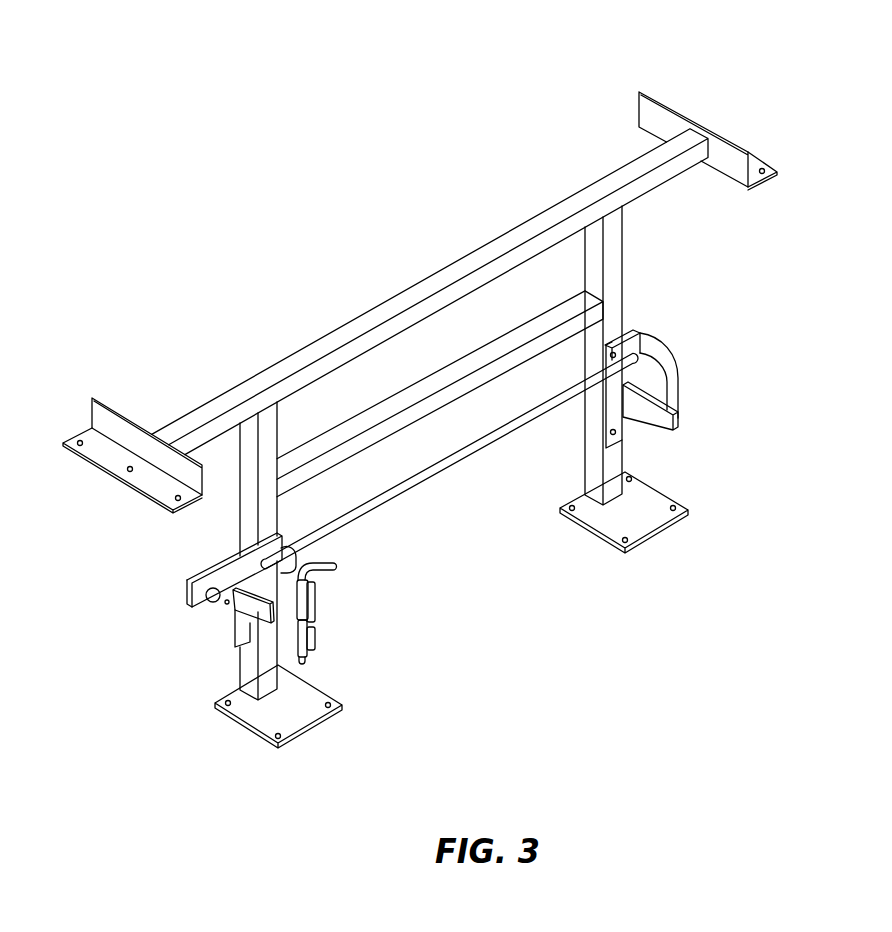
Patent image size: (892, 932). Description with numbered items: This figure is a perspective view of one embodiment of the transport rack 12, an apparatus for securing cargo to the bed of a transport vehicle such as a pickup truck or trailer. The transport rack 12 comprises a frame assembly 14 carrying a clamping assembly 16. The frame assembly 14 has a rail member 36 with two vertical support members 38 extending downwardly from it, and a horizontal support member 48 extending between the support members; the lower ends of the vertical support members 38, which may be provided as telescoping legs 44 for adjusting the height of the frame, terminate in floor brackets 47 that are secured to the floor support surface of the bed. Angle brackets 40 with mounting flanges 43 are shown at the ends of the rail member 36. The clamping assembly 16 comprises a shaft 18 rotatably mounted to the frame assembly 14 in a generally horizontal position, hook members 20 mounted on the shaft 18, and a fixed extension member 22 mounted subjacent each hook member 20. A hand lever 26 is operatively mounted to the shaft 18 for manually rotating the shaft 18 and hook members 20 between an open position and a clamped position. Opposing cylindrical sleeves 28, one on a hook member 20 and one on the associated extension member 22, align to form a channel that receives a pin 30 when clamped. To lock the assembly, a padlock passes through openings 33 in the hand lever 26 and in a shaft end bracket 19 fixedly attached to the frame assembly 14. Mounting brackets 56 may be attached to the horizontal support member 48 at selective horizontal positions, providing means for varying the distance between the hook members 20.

The transport rack 12 is at (270, 226).
The frame assembly 14 is at (530, 226).
The clamping assembly 16 is at (126, 622).
The shaft 18 is at (437, 478).
The shaft end bracket 19 is at (186, 579).
The hook member 20 is at (294, 562).
The fixed extension member 22 is at (233, 663).
The hand lever 26 is at (256, 617).
The cylindrical sleeve 28 is at (309, 598).
The pin 30 is at (333, 567).
The opening 33 is at (226, 612).
The rail member 36 is at (402, 300).
The vertical support member 38 is at (618, 234).
The angle bracket 40 is at (138, 400).
The mounting flange 43 is at (95, 456).
The telescoping leg 44 is at (224, 723).
The floor bracket 47 is at (297, 712).
The horizontal support member 48 is at (436, 384).
The mounting bracket 56 is at (228, 577).